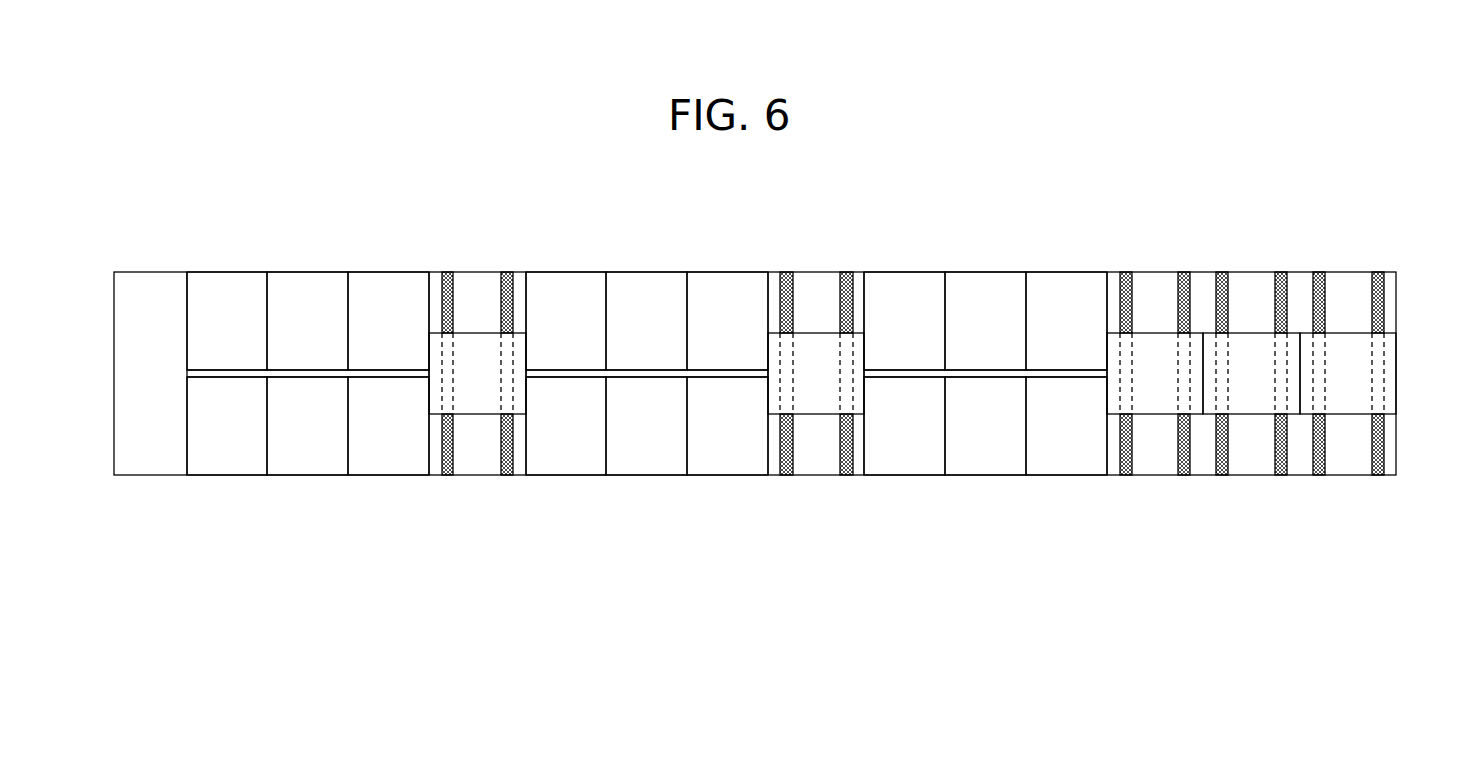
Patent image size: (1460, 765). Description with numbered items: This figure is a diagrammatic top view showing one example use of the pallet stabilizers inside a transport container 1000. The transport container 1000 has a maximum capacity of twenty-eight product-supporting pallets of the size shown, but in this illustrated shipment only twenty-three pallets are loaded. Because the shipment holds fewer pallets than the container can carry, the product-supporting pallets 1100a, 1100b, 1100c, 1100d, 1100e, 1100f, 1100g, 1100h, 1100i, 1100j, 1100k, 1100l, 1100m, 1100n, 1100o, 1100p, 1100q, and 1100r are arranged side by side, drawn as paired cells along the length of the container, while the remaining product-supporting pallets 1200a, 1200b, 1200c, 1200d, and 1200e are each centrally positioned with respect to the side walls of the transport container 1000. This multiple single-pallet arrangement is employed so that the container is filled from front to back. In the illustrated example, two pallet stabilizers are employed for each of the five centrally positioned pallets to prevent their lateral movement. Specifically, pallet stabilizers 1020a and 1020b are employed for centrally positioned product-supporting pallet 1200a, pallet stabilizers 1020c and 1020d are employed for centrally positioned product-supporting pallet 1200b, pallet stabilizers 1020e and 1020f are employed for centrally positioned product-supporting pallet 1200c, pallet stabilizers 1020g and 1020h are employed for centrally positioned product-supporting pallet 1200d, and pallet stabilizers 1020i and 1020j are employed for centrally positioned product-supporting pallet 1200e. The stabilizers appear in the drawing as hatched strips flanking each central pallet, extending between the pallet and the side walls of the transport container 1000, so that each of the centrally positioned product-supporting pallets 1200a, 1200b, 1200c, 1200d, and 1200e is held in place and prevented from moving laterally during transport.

The transport container 1000 is at (1168, 152).
The product-supporting pallet 1100a is at (212, 271).
The product-supporting pallet 1100b is at (297, 271).
The product-supporting pallet 1100c is at (372, 271).
The product-supporting pallet 1100d is at (222, 478).
The product-supporting pallet 1100e is at (307, 478).
The product-supporting pallet 1100f is at (390, 478).
The product-supporting pallet 1100g is at (586, 271).
The product-supporting pallet 1100h is at (663, 271).
The product-supporting pallet 1100i is at (742, 271).
The product-supporting pallet 1100j is at (556, 478).
The product-supporting pallet 1100k is at (639, 478).
The product-supporting pallet 1100l is at (713, 478).
The product-supporting pallet 1100m is at (905, 271).
The product-supporting pallet 1100n is at (989, 271).
The product-supporting pallet 1100o is at (1073, 271).
The product-supporting pallet 1100p is at (924, 478).
The product-supporting pallet 1100q is at (1008, 478).
The product-supporting pallet 1100r is at (1082, 478).
The centrally positioned product-supporting pallet 1200a is at (477, 419).
The centrally positioned product-supporting pallet 1200b is at (816, 331).
The centrally positioned product-supporting pallet 1200c is at (1156, 331).
The centrally positioned product-supporting pallet 1200d is at (1258, 331).
The centrally positioned product-supporting pallet 1200e is at (1355, 331).
The pallet stabilizer 1020a is at (448, 271).
The pallet stabilizer 1020b is at (507, 271).
The pallet stabilizer 1020c is at (786, 478).
The pallet stabilizer 1020d is at (846, 478).
The pallet stabilizer 1020e is at (1125, 478).
The pallet stabilizer 1020f is at (1183, 271).
The pallet stabilizer 1020g is at (1222, 478).
The pallet stabilizer 1020h is at (1280, 271).
The pallet stabilizer 1020i is at (1319, 478).
The pallet stabilizer 1020j is at (1378, 271).